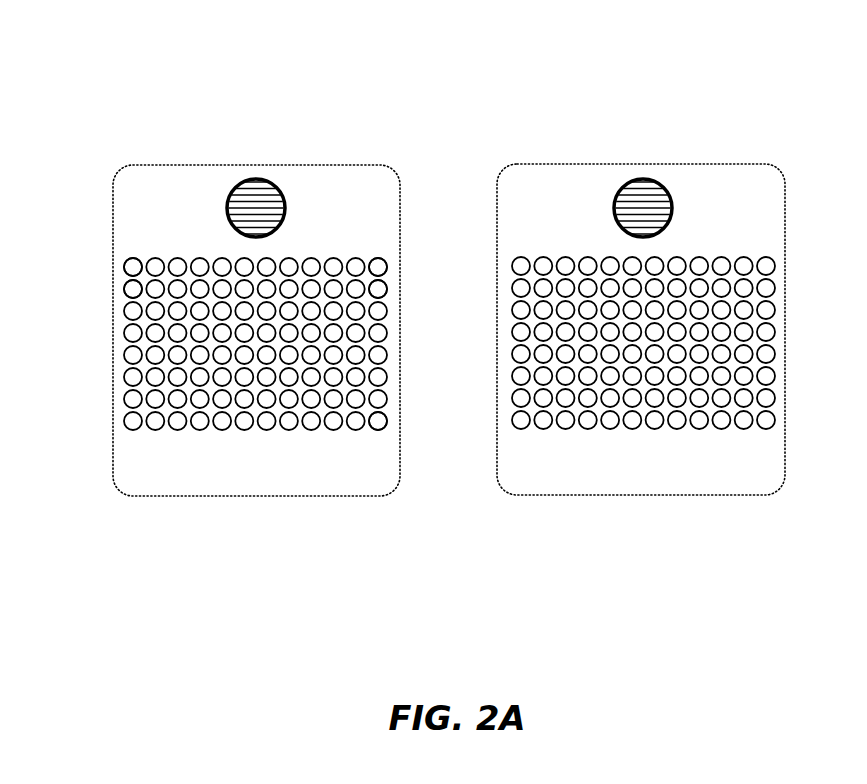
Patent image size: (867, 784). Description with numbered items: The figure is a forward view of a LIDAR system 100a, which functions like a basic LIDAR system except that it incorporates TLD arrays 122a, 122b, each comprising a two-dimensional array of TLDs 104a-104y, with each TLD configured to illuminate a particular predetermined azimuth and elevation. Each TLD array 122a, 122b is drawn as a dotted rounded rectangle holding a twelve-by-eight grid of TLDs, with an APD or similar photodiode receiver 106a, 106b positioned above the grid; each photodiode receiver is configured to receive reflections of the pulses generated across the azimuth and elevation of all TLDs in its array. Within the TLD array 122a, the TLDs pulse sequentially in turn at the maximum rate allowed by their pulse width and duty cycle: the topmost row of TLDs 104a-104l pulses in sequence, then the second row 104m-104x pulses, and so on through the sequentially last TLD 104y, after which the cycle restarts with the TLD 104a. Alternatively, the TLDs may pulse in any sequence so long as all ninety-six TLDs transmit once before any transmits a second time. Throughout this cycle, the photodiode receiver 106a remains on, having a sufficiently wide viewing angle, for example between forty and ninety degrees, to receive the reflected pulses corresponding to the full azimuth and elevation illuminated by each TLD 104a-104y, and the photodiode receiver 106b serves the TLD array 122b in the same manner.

The LIDAR system 100a is at (88, 83).
The TLD 104a is at (127, 267).
The TLD 104l is at (384, 267).
The TLD 104m is at (127, 290).
The TLD 104x is at (384, 290).
The TLD 104y is at (384, 422).
The photodiode receiver 106a is at (256, 200).
The photodiode receiver 106b is at (647, 198).
The TLD array 122a is at (257, 497).
The TLD array 122b is at (638, 496).